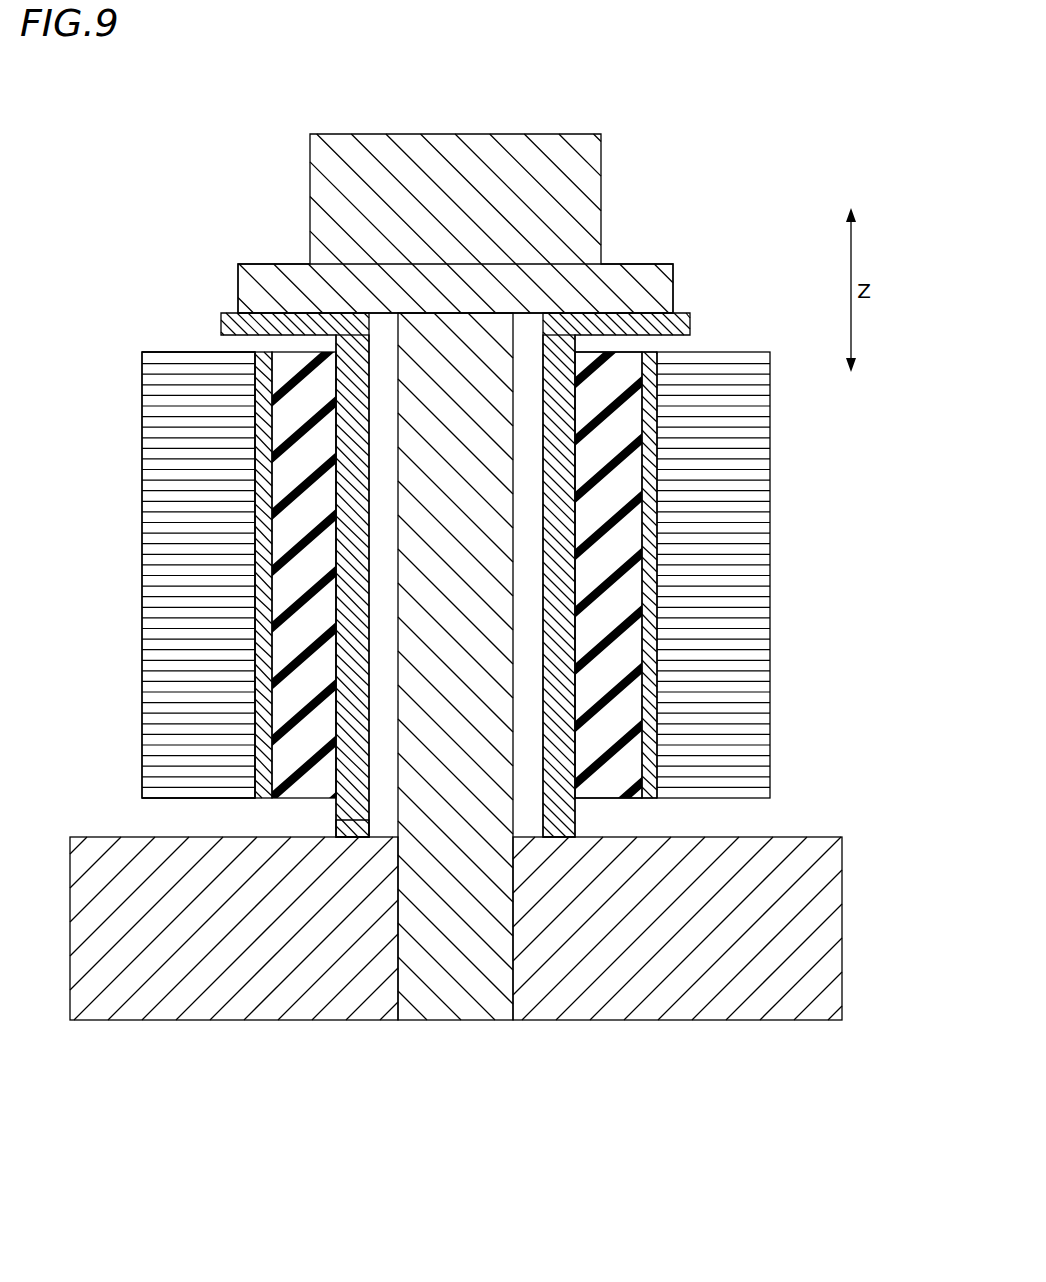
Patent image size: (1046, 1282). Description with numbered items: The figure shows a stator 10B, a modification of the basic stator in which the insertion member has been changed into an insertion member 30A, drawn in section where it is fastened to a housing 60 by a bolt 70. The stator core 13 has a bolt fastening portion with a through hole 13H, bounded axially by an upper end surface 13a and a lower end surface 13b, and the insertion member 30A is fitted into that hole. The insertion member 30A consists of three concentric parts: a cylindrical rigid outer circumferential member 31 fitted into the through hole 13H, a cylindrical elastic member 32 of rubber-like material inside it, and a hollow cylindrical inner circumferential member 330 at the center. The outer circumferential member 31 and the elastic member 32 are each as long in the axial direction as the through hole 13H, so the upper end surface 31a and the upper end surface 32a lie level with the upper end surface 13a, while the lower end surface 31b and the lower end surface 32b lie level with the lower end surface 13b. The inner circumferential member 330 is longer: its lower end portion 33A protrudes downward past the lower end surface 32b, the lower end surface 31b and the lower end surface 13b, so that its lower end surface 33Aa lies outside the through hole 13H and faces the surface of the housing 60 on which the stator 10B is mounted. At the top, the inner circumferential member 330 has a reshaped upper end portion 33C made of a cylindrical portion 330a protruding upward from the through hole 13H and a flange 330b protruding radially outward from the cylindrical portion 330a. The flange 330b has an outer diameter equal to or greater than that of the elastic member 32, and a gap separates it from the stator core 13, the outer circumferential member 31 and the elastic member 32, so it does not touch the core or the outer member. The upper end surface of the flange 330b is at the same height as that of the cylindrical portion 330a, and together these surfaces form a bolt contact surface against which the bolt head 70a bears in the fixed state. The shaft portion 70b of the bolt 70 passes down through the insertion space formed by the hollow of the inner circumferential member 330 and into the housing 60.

The stator 10B is at (459, 580).
The stator core 13 is at (482, 580).
The upper end surface of the stator core 13a is at (167, 352).
The lower end surface of the stator core 13b is at (160, 803).
The through hole 13H is at (225, 397).
The insertion member 30A is at (205, 339).
The outer circumferential member 31 is at (564, 560).
The upper end surface of the outer circumferential member 31a is at (645, 351).
The lower end surface of the outer circumferential member 31b is at (652, 800).
The elastic member 32 is at (593, 574).
The upper end surface of the elastic member 32a is at (635, 353).
The lower end surface of the elastic member 32b is at (605, 800).
The lower end portion of the inner circumferential member 33A is at (456, 714).
The lower end surface of the inner circumferential member 33Aa is at (360, 837).
The upper end portion of the inner circumferential member 33C is at (402, 617).
The inner circumferential member 330 is at (400, 516).
The cylindrical portion 330a is at (383, 516).
The flange 330b is at (637, 307).
The housing 60 is at (645, 1000).
The bolt 70 is at (455, 580).
The bolt head 70a is at (450, 148).
The shaft portion 70b is at (482, 988).